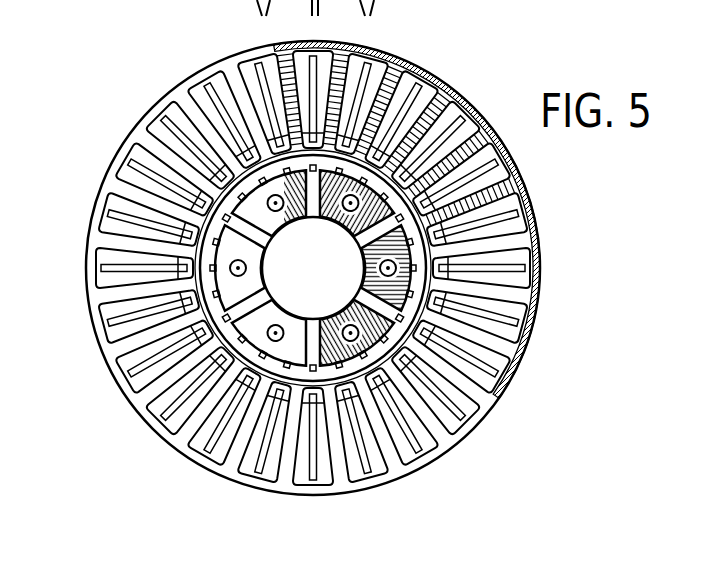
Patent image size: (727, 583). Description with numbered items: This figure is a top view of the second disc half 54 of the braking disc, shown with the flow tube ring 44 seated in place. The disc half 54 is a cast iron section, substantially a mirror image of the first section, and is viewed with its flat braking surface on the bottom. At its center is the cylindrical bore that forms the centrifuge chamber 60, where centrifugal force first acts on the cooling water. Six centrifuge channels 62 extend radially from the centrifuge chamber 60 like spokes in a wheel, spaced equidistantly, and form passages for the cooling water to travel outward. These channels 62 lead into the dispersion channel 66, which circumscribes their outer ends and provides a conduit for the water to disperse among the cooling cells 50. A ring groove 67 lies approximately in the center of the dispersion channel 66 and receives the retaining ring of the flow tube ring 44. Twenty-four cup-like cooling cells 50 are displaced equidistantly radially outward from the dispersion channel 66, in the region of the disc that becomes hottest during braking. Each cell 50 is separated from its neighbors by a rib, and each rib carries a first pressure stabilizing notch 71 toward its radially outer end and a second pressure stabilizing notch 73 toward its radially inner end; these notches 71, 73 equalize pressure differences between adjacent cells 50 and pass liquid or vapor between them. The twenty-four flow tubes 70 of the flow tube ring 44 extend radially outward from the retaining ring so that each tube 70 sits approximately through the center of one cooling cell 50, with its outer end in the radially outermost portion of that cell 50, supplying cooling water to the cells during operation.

The flow tube ring 44 is at (262, 330).
The cooling cells 50 is at (519, 203).
The second disc half 54 is at (473, 97).
The centrifuge chamber 60 is at (309, 263).
The centrifuge channels 62 is at (352, 240).
The dispersion channel 66 is at (213, 276).
The ring groove 67 is at (313, 268).
The flow tubes 70 is at (483, 400).
The first pressure stabilizing notch 71 is at (237, 72).
The second pressure stabilizing notch 73 is at (108, 279).